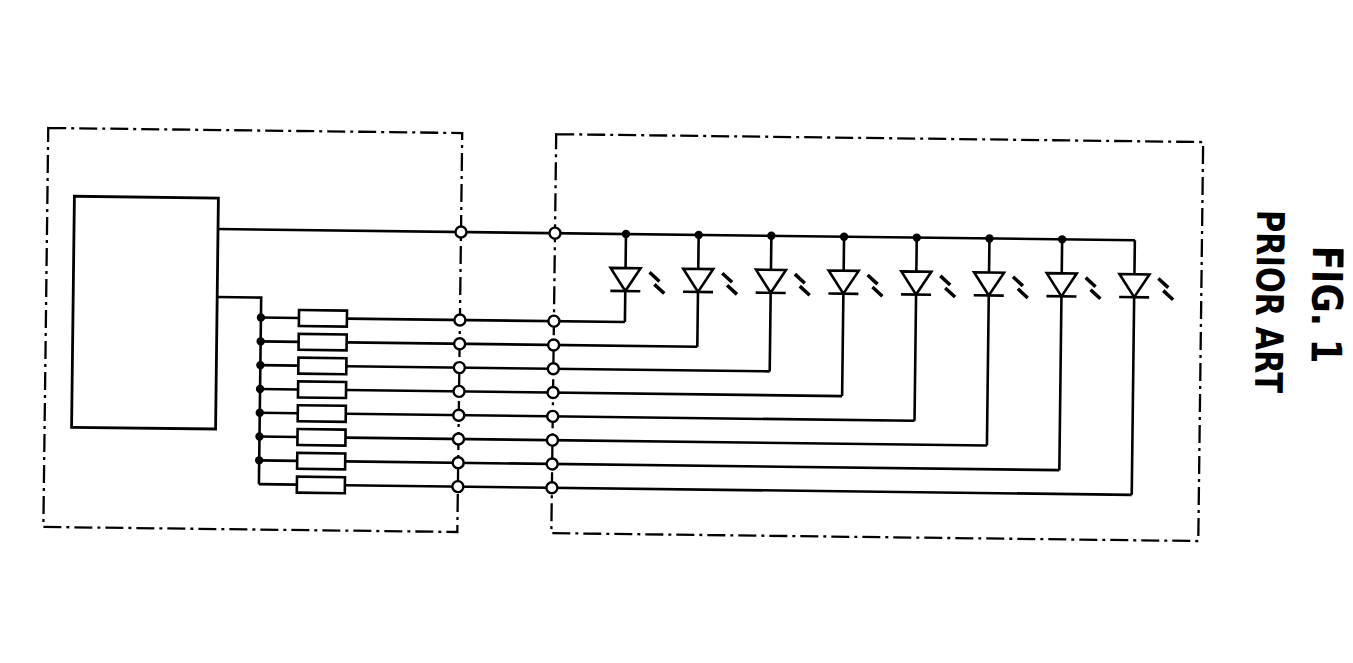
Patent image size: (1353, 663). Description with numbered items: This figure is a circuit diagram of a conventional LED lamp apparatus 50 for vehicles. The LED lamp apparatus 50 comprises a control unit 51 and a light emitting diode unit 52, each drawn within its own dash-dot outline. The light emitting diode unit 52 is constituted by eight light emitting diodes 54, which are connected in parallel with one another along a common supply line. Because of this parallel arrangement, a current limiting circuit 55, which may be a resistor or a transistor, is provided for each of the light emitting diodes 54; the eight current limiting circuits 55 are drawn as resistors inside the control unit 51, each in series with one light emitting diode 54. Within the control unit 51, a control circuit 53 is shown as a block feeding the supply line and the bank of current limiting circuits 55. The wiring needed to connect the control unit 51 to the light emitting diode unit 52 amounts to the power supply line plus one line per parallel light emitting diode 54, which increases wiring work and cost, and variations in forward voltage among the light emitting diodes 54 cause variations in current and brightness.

The LED lamp apparatus 50 is at (517, 118).
The control unit 51 is at (318, 133).
The light emitting diode unit 52 is at (738, 133).
The control circuit 53 is at (220, 203).
The light emitting diode 54 is at (768, 268).
The current limiting circuit 55 is at (348, 350).